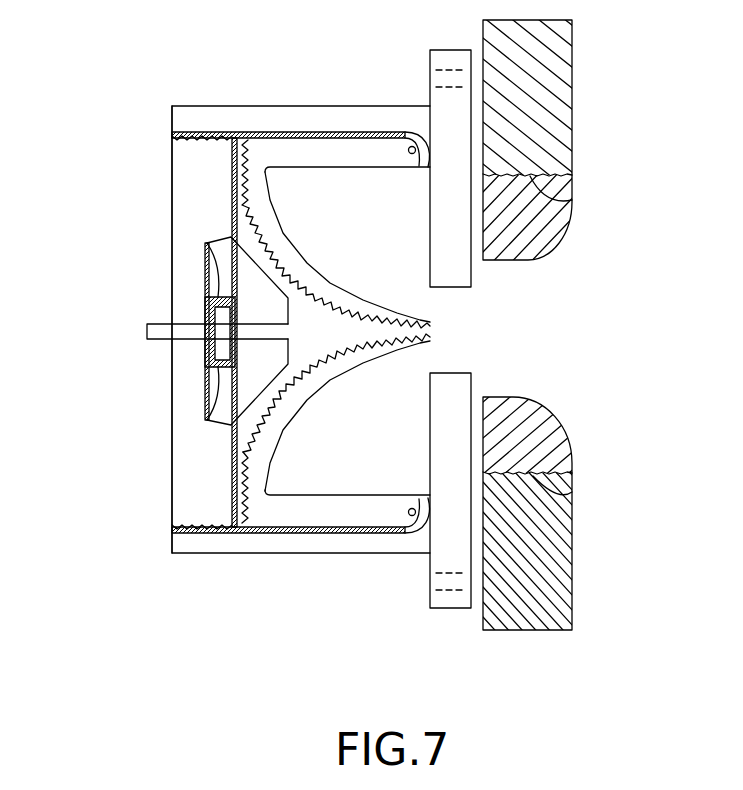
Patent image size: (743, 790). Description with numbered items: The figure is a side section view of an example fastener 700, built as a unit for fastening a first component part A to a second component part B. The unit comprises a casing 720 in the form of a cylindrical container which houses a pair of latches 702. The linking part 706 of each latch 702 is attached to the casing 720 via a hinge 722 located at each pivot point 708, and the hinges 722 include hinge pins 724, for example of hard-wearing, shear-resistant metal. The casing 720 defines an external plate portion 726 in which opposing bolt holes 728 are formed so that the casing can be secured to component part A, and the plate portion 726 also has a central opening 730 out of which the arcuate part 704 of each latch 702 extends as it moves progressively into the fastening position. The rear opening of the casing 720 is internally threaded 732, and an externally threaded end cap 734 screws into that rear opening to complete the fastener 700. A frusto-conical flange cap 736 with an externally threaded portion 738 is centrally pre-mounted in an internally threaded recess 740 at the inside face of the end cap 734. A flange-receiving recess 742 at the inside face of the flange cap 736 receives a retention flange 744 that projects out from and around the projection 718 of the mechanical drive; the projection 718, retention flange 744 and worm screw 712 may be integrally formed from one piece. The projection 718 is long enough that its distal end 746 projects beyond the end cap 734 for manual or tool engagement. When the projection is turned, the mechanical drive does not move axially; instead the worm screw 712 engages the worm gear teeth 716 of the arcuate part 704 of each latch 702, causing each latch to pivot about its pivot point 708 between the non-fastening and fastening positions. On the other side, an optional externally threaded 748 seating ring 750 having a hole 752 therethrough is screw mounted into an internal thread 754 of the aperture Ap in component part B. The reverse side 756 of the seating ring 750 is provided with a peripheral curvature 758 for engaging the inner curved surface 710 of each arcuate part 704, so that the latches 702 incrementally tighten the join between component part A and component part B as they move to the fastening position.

The fastener 700 is at (153, 590).
The latch 702 is at (250, 130).
The arcuate part 704 is at (313, 283).
The linking part 706 is at (318, 152).
The pivot point 708 is at (432, 140).
The inner curved surface 710 is at (337, 373).
The worm screw 712 is at (433, 328).
The worm gear teeth 716 is at (233, 200).
The projection 718 is at (176, 332).
The casing 720 is at (347, 107).
The hinge 722 is at (420, 160).
The hinge pin 724 is at (406, 130).
The external plate portion 726 is at (460, 270).
The bolt hole 728 is at (432, 588).
The central opening 730 is at (478, 338).
The internal thread 732 is at (203, 133).
The end cap 734 is at (187, 135).
The flange cap 736 is at (220, 385).
The externally threaded portion 738 is at (205, 403).
The internally threaded recess 740 is at (218, 418).
The flange-receiving recess 742 is at (210, 280).
The retention flange 744 is at (203, 305).
The distal end 746 is at (147, 330).
The external thread 748 is at (537, 202).
The seating ring 750 is at (571, 237).
The hole 752 is at (537, 393).
The internal thread 754 is at (573, 497).
The reverse side 756 is at (573, 468).
The peripheral curvature 758 is at (570, 443).
The aperture Ap is at (576, 172).
The first part A is at (86, 629).
The second part B is at (536, 648).